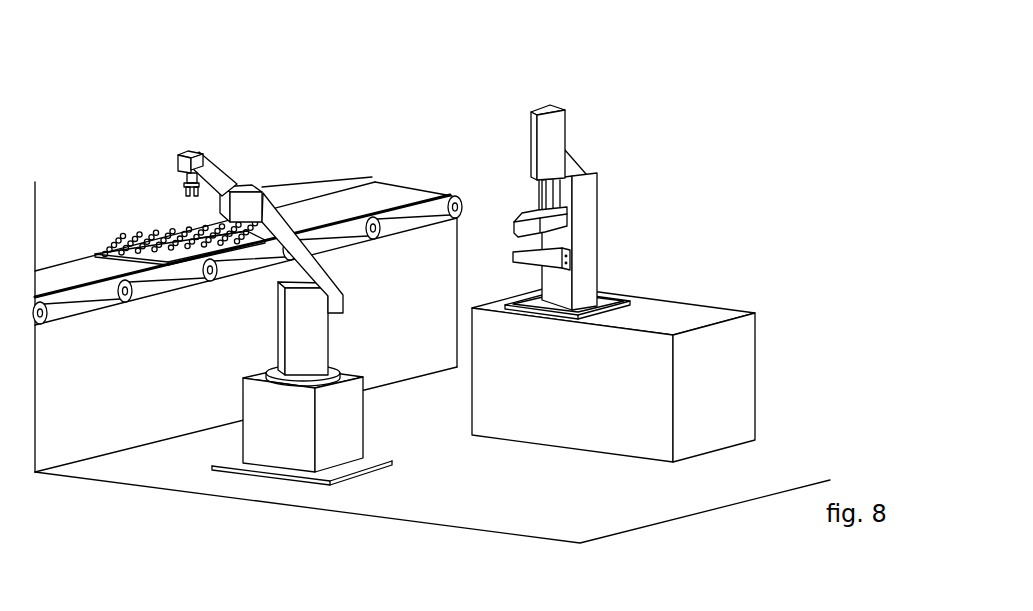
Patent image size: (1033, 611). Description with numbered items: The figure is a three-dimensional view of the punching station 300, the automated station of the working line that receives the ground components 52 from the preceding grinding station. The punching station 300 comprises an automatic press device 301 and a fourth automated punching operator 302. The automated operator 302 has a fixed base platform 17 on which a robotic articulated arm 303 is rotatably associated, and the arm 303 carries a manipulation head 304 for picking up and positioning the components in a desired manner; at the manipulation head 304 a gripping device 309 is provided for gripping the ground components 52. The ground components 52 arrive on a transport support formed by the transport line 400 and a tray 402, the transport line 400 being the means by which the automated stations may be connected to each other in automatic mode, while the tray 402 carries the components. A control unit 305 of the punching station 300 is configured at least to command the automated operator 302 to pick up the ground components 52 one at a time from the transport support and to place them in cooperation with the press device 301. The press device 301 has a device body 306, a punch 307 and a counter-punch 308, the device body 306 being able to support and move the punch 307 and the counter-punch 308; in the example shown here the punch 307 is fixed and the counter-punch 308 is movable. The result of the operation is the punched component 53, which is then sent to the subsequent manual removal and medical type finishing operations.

The fixed base platform 17 is at (273, 442).
The ground components 52 is at (121, 242).
The punched component 53 is at (247, 234).
The punching station 300 is at (801, 98).
The automatic press device 301 is at (573, 189).
The fourth automated punching operator 302 is at (247, 166).
The robotic articulated arm 303 is at (259, 178).
The manipulation head 304 is at (200, 147).
The control unit 305 is at (734, 388).
The device body 306 is at (590, 198).
The punch 307 is at (518, 252).
The counter-punch 308 is at (516, 237).
The gripping device 309 is at (180, 190).
The transport line 400 is at (374, 199).
The tray 402 is at (95, 251).